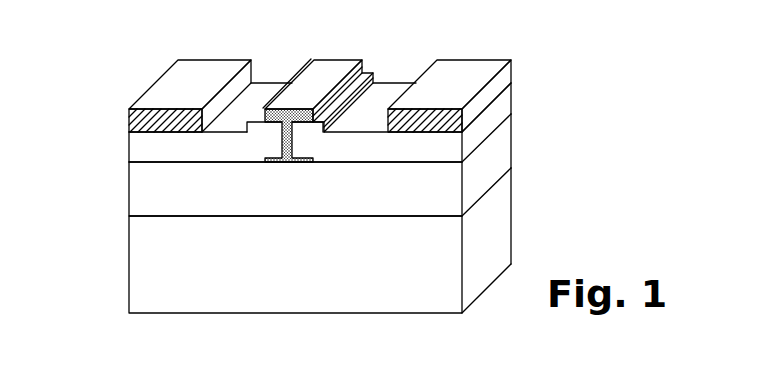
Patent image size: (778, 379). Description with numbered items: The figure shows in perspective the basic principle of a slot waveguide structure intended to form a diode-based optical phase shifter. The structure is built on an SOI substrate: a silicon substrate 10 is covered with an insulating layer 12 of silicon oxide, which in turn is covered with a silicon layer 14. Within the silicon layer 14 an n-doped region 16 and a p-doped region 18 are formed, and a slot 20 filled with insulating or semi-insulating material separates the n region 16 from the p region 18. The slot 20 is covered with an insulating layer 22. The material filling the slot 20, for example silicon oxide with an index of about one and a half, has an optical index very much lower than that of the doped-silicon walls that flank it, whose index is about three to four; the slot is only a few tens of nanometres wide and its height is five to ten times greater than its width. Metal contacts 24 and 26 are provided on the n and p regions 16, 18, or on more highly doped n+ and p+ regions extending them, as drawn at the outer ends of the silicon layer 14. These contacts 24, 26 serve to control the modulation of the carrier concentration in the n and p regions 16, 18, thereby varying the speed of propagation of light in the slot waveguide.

The silicon substrate 10 is at (140, 283).
The insulating layer 12 is at (140, 195).
The silicon layer 14 is at (140, 146).
The n-doped region 16 is at (225, 143).
The p-doped region 18 is at (365, 143).
The slot 20 is at (283, 137).
The insulating layer 22 is at (308, 90).
The metal contact 24 is at (185, 92).
The metal contact 26 is at (445, 90).